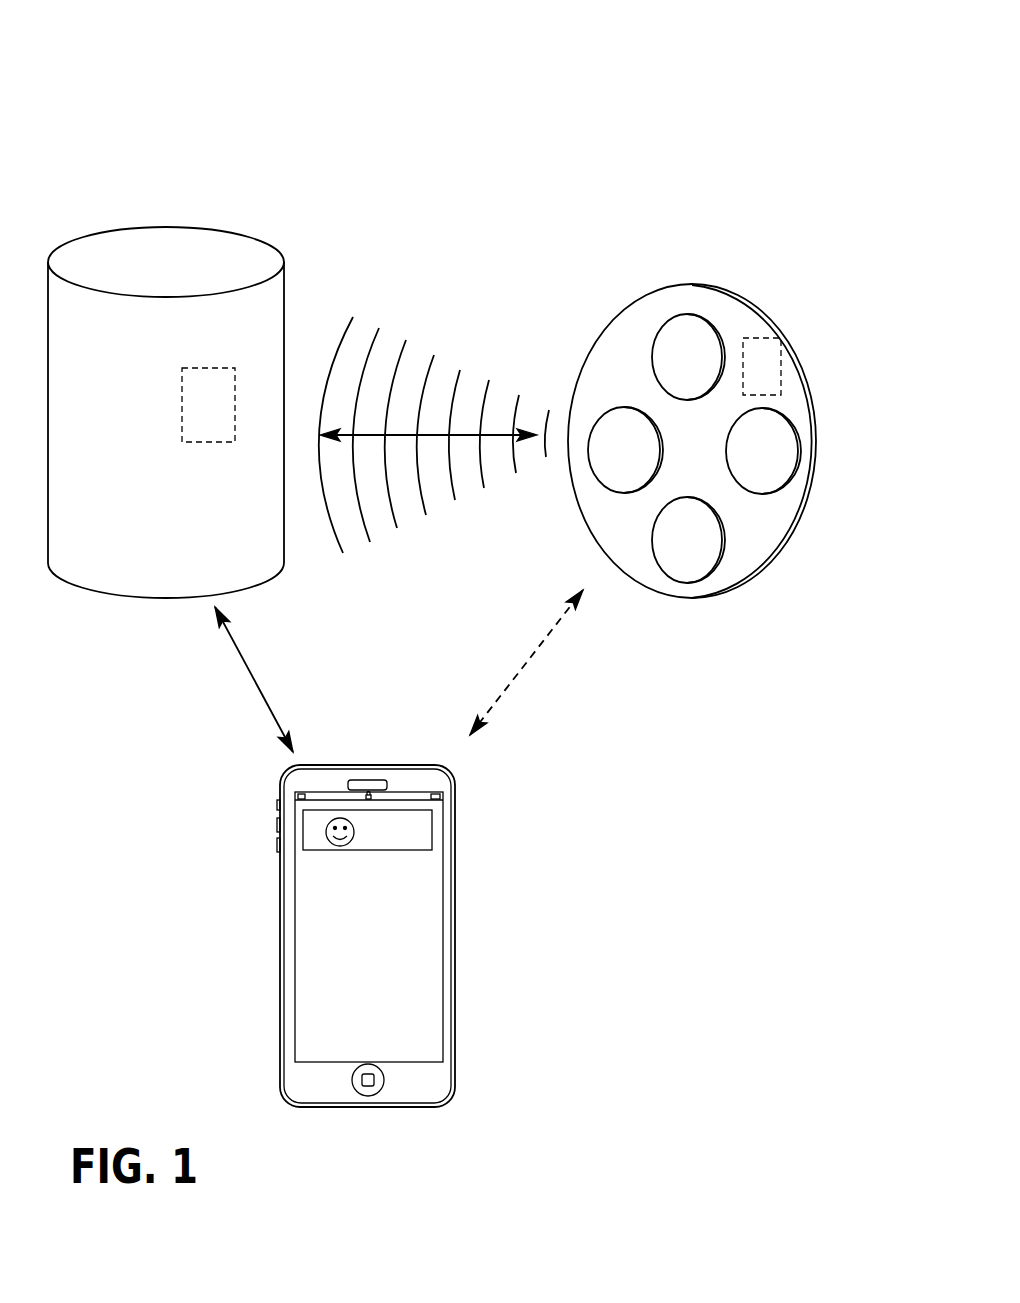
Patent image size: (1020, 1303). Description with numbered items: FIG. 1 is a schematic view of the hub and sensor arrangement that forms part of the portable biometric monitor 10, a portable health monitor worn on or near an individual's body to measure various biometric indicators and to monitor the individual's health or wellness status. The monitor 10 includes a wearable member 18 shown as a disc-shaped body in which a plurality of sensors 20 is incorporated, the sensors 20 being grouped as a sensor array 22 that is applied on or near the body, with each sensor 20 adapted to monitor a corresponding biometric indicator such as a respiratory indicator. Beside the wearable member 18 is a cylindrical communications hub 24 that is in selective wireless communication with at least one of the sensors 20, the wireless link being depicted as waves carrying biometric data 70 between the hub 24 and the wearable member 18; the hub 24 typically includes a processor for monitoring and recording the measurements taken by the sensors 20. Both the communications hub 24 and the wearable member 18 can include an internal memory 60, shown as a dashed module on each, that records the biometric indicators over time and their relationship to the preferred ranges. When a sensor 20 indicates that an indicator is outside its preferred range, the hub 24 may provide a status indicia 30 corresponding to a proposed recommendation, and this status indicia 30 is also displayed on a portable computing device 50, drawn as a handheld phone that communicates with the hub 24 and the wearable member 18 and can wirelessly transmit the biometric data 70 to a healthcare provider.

The portable biometric monitor 10 is at (452, 125).
The wearable member 18 is at (743, 385).
The sensors 20 is at (787, 452).
The sensor array 22 is at (750, 525).
The communications hub 24 is at (227, 226).
The status indicia 30 is at (257, 678).
The portable computing device 50 is at (463, 820).
The internal memory 60 is at (230, 368).
The biometric data 70 is at (467, 413).